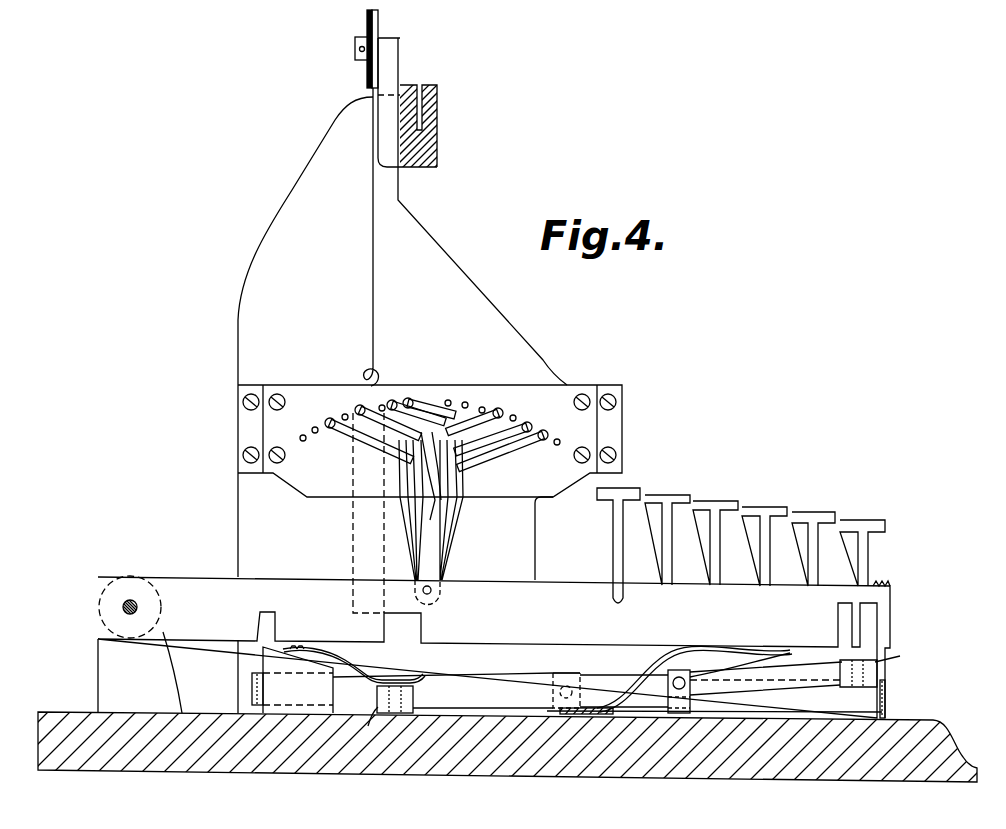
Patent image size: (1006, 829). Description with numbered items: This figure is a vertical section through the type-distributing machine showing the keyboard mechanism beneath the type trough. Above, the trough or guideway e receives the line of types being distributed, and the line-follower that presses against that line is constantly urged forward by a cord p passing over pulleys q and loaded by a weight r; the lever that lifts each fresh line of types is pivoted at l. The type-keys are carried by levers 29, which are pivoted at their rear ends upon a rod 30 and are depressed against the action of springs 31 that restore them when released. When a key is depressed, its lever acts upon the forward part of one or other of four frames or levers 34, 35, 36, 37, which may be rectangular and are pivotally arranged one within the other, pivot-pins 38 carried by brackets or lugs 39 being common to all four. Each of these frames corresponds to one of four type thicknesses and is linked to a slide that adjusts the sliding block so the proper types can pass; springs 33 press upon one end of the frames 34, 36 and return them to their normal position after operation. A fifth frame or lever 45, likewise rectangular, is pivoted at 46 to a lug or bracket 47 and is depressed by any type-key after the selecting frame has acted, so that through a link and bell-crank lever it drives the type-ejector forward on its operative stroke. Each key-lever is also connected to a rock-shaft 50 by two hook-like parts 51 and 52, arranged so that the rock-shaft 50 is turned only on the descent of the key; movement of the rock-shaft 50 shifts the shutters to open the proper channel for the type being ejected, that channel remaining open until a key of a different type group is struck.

The levers 29 is at (494, 647).
The rod 30 is at (123, 606).
The springs 31 is at (730, 655).
The springs 33 is at (367, 658).
The pivotal frame 34 is at (408, 690).
The pivotal frame 35 is at (408, 708).
The pivotal frame 36 is at (377, 692).
The pivotal frame 37 is at (643, 694).
The pivot-pins 38 is at (692, 684).
The brackets or lugs 39 is at (766, 688).
The frame or lever 45 is at (714, 700).
The pivot 46 is at (552, 693).
The lug or bracket 47 is at (567, 673).
The rock-shaft 50 is at (325, 413).
The hook-like part 51 is at (435, 520).
The hook-like part 52 is at (362, 430).
The trough or guideway e is at (422, 105).
The cord p is at (372, 259).
The pulleys q is at (370, 22).
The weight r is at (368, 513).
The pivot l is at (723, 503).